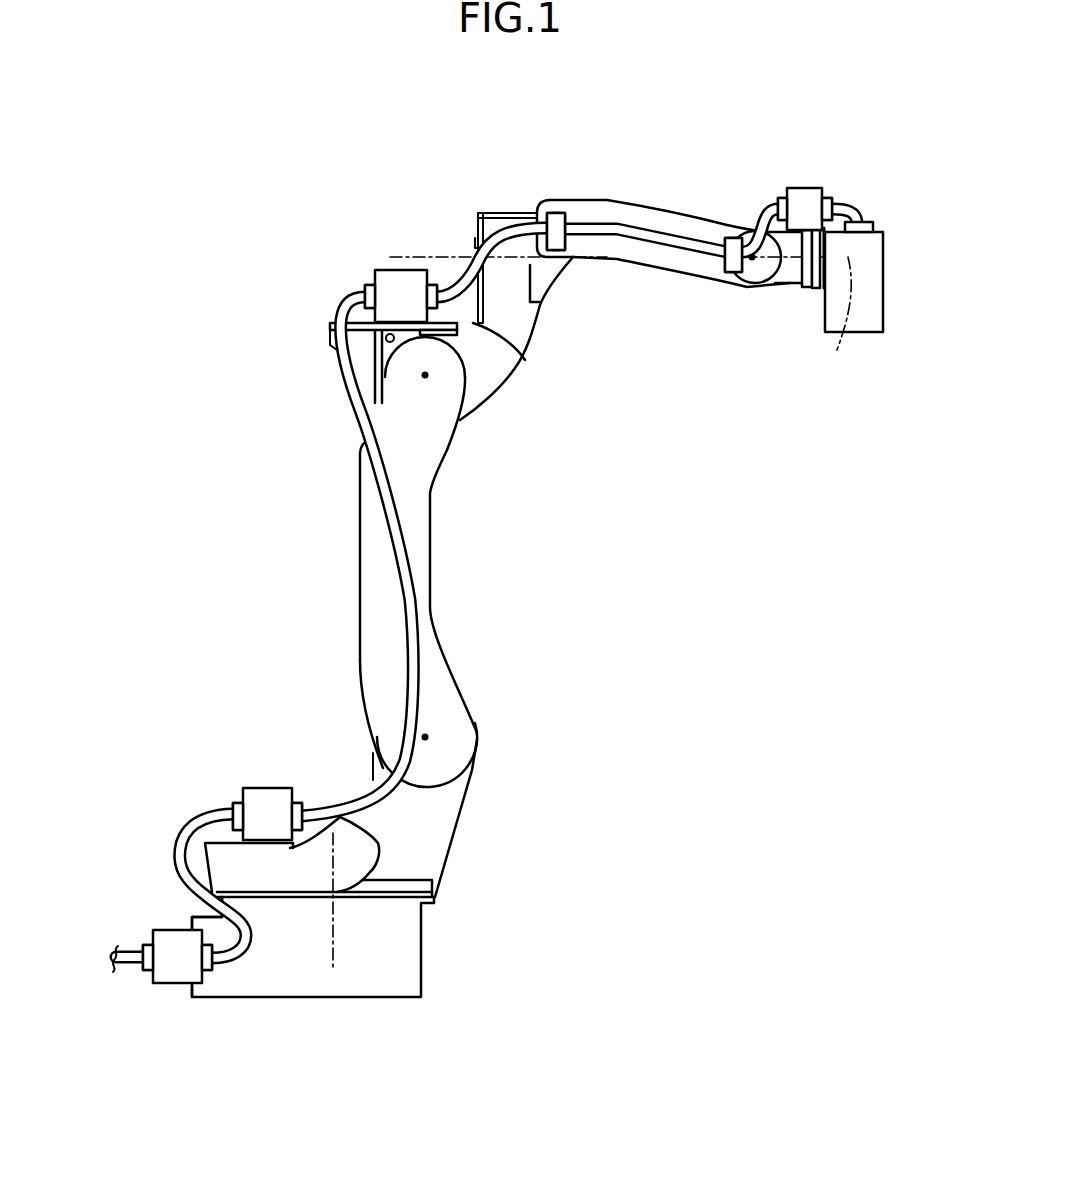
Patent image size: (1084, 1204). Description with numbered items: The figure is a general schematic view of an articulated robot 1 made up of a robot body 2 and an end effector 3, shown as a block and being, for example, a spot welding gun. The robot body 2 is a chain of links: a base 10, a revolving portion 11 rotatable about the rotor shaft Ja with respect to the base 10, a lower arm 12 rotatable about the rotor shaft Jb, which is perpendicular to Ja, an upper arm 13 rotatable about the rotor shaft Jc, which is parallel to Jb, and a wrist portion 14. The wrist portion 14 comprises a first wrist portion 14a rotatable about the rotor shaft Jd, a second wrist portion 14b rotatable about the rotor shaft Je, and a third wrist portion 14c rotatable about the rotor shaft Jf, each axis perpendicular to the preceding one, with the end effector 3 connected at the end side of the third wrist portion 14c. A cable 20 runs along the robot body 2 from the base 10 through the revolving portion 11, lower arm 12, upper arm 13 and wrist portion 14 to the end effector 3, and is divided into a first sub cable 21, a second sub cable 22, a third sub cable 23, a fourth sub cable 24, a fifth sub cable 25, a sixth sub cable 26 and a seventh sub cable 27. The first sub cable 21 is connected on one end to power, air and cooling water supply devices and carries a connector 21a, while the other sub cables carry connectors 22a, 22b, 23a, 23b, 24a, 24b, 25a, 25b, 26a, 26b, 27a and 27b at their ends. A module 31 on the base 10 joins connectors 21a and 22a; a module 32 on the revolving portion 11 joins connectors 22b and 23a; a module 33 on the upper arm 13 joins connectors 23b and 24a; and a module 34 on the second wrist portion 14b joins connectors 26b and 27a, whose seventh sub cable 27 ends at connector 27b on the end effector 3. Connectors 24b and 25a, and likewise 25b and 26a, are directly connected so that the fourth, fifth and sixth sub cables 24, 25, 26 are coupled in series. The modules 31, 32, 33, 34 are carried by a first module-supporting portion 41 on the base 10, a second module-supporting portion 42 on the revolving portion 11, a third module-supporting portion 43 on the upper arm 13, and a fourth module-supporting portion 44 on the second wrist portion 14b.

The robot 1 is at (540, 130).
The robot body 2 is at (509, 516).
The end effector 3 is at (887, 332).
The base 10 is at (415, 977).
The revolving portion 11 is at (440, 868).
The lower arm 12 is at (445, 660).
The upper arm 13 is at (512, 213).
The wrist portion 14 is at (626, 262).
The first wrist portion 14a is at (670, 217).
The second wrist portion 14b is at (792, 265).
The third wrist portion 14c is at (823, 287).
The cable 20 is at (330, 288).
The first sub cable 21 is at (118, 950).
The connector 21a is at (150, 975).
The second sub cable 22 is at (190, 825).
The connector 22a is at (205, 972).
The connector 22b is at (238, 803).
The third sub cable 23 is at (363, 423).
The connector 23a is at (297, 803).
The connector 23b is at (372, 285).
The fourth sub cable 24 is at (490, 213).
The connector 24a is at (432, 285).
The connector 24b is at (552, 213).
The fifth sub cable 25 is at (640, 217).
The connector 25a is at (560, 213).
The connector 25b is at (728, 238).
The sixth sub cable 26 is at (763, 212).
The connector 26a is at (733, 238).
The connector 26b is at (783, 200).
The seventh sub cable 27 is at (857, 207).
The connector 27a is at (833, 200).
The connector 27b is at (878, 224).
The module 31 is at (168, 930).
The module 32 is at (270, 788).
The module 33 is at (385, 270).
The module 34 is at (797, 188).
The first module-supporting portion 41 is at (190, 990).
The second module-supporting portion 42 is at (222, 843).
The third module-supporting portion 43 is at (453, 330).
The fourth module-supporting portion 44 is at (812, 228).
The rotor shaft Ja is at (336, 930).
The rotor shaft Jb is at (425, 737).
The rotor shaft Jc is at (425, 375).
The rotor shaft Jd is at (412, 257).
The rotor shaft Je is at (752, 260).
The rotor shaft Jf is at (837, 350).